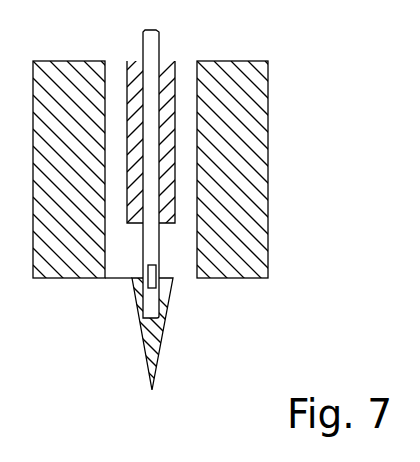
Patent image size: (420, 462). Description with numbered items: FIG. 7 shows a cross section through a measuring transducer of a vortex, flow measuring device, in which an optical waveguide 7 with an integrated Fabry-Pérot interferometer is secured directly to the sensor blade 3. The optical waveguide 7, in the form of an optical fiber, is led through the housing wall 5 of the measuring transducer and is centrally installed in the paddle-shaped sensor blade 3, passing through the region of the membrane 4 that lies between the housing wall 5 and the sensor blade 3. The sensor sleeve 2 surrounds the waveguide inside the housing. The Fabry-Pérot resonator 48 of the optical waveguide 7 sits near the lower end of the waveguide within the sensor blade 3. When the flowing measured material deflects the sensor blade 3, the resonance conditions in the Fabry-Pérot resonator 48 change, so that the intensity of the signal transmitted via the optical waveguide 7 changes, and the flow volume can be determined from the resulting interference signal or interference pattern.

The sensor sleeve 2 is at (170, 105).
The housing wall 5 is at (222, 148).
The optical waveguide 7 is at (150, 240).
The Fabry-Pérot resonator 48 is at (156, 285).
The sensor blade 3 is at (163, 338).
The membrane 4 is at (118, 280).